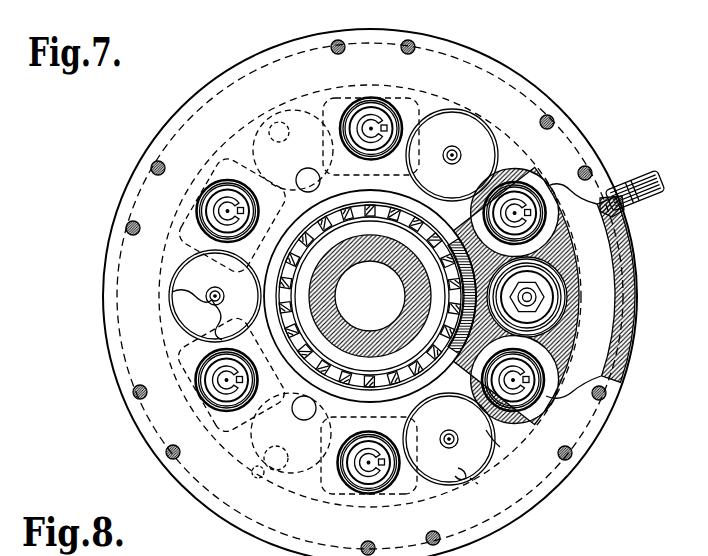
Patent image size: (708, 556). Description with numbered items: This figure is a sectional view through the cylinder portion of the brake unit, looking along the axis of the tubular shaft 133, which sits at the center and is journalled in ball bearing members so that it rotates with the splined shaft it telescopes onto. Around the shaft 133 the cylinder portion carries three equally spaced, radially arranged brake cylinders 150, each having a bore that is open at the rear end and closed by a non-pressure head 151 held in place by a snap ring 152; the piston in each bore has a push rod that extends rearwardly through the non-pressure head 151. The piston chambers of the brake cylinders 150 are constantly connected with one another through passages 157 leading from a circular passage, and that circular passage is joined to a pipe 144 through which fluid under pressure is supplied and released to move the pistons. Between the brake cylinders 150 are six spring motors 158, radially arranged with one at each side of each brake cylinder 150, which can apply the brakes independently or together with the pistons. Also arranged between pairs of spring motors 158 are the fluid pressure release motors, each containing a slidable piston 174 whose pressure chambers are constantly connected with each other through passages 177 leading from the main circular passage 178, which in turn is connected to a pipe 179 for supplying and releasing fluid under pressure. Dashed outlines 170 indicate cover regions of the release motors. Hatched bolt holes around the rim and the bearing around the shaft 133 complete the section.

The tubular shaft 133 is at (350, 338).
The pipe 144 is at (631, 183).
The brake cylinder 150 is at (471, 138).
The non-pressure head 151 is at (500, 447).
The snap ring 152 is at (460, 474).
The passage 157 is at (479, 483).
The spring motor 158 is at (370, 97).
The cover plate opening 170 is at (293, 122).
The piston 174 is at (570, 336).
The passage 177 is at (567, 298).
The main circular passage 178 is at (607, 259).
The pipe 179 is at (626, 205).